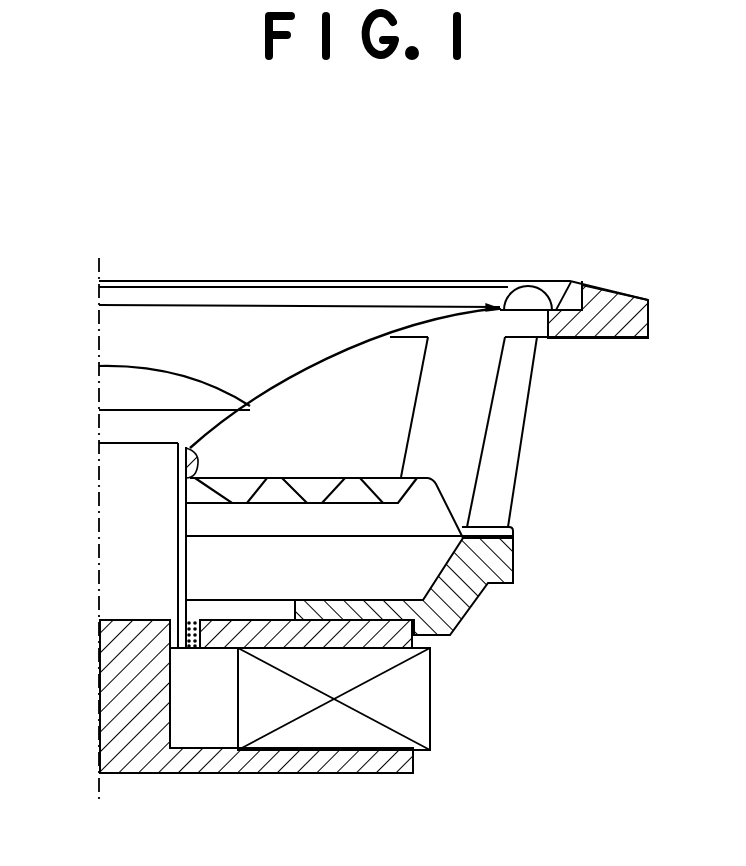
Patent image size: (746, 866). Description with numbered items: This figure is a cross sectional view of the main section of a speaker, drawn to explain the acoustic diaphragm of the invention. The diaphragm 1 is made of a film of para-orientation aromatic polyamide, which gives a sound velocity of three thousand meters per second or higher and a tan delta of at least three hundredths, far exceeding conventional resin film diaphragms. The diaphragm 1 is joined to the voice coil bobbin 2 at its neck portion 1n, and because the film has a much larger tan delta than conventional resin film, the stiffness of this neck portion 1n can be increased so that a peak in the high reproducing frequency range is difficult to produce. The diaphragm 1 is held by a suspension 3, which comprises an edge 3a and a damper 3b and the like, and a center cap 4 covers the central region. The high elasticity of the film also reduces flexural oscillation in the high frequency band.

The diaphragm 1 is at (328, 358).
The neck portion 1n is at (198, 458).
The voice coil bobbin 2 is at (186, 473).
The suspension 3 is at (417, 417).
The edge 3a is at (529, 286).
The damper 3b is at (350, 477).
The center cap 4 is at (121, 367).